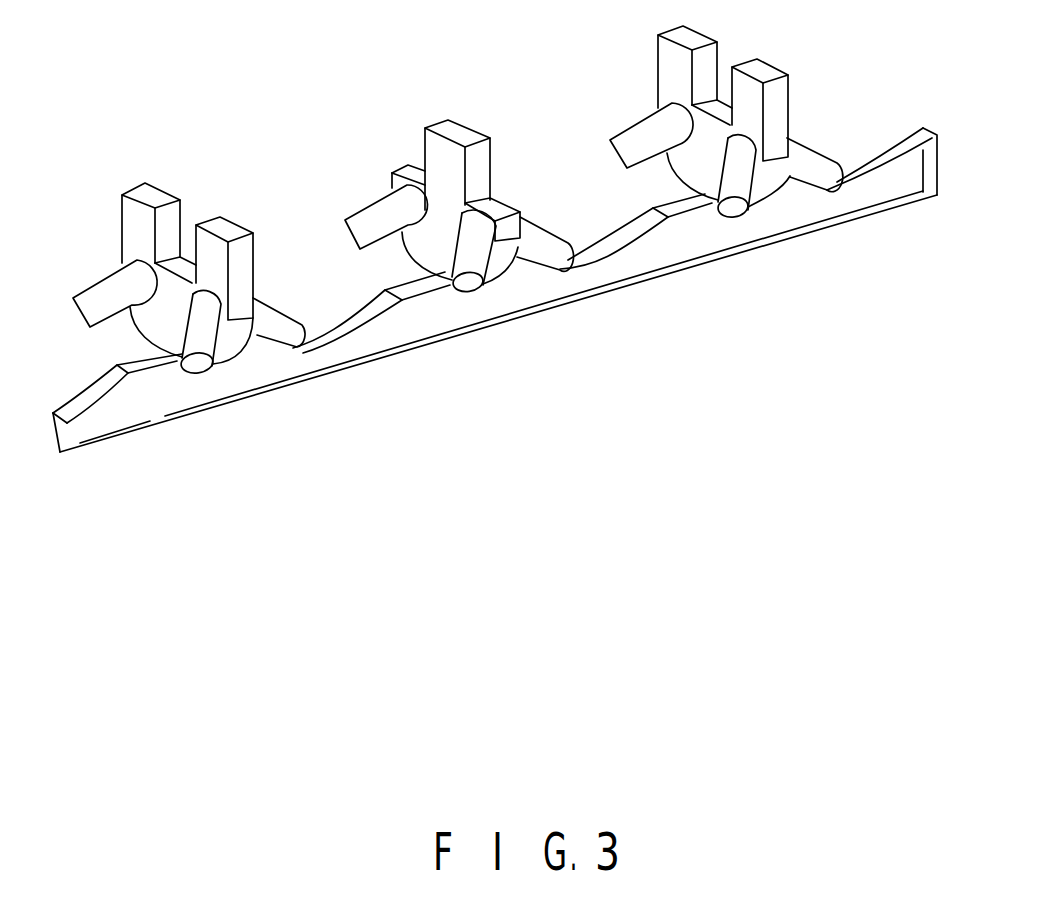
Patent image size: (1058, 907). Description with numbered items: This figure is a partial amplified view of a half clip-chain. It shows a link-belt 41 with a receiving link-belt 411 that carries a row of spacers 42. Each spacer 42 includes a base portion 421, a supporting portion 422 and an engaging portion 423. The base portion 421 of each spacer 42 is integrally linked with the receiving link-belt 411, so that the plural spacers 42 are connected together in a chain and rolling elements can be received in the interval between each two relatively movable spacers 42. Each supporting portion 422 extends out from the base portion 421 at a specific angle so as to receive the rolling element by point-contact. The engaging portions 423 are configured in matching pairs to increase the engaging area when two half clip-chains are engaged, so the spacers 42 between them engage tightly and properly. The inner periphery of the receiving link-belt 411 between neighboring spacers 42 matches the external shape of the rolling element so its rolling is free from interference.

The link-belt 41 is at (178, 428).
The receiving link-belt 411 is at (876, 233).
The spacer 42 is at (761, 113).
The base portion 421 is at (441, 338).
The supporting portion 422 is at (622, 309).
The engaging portion 423 is at (698, 72).